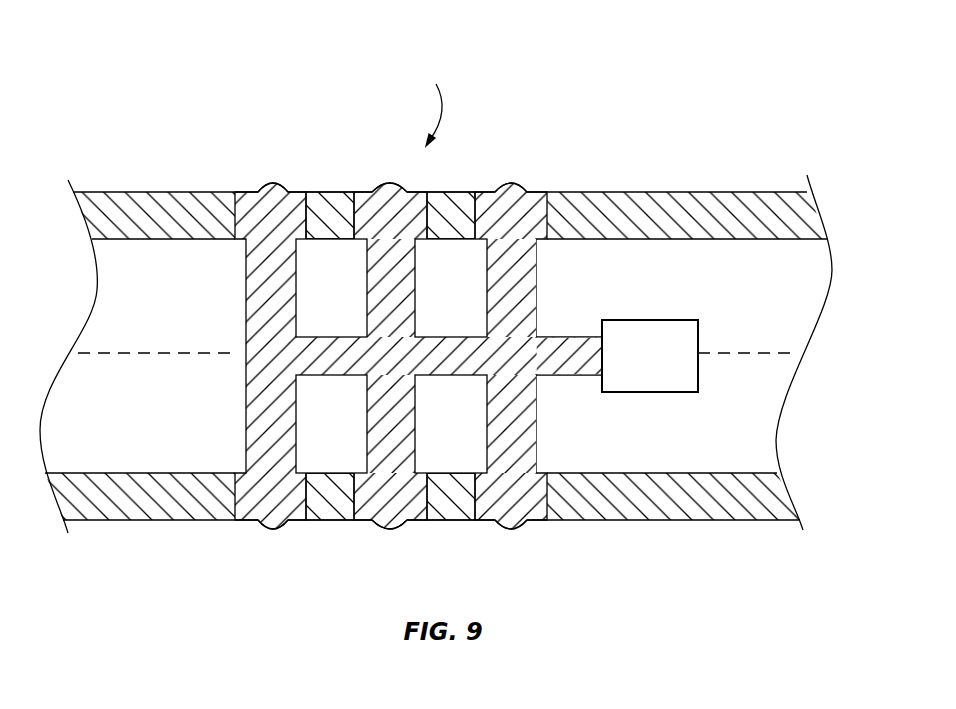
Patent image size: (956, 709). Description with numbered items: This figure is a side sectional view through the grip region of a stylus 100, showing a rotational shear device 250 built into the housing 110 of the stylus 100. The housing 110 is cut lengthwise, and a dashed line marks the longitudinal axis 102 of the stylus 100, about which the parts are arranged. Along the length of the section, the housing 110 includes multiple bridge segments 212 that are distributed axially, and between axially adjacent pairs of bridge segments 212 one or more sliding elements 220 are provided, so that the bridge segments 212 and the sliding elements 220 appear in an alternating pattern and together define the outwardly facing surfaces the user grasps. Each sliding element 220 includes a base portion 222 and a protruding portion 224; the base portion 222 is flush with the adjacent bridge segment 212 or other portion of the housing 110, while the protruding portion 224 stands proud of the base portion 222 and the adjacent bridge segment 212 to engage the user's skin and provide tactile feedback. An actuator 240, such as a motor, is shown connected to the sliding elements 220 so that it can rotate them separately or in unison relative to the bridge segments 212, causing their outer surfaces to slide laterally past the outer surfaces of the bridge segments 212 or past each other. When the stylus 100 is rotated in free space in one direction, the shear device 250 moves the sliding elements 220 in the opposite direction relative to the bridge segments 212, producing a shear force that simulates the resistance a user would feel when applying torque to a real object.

The stylus 100 is at (103, 102).
The longitudinal axis 102 is at (165, 353).
The housing 110 is at (737, 192).
The bridge segments 212 is at (327, 240).
The sliding elements 220 is at (297, 192).
The base portion 222 is at (245, 192).
The protruding portion 224 is at (268, 192).
The actuator 240 is at (650, 356).
The shear device 250 is at (441, 103).